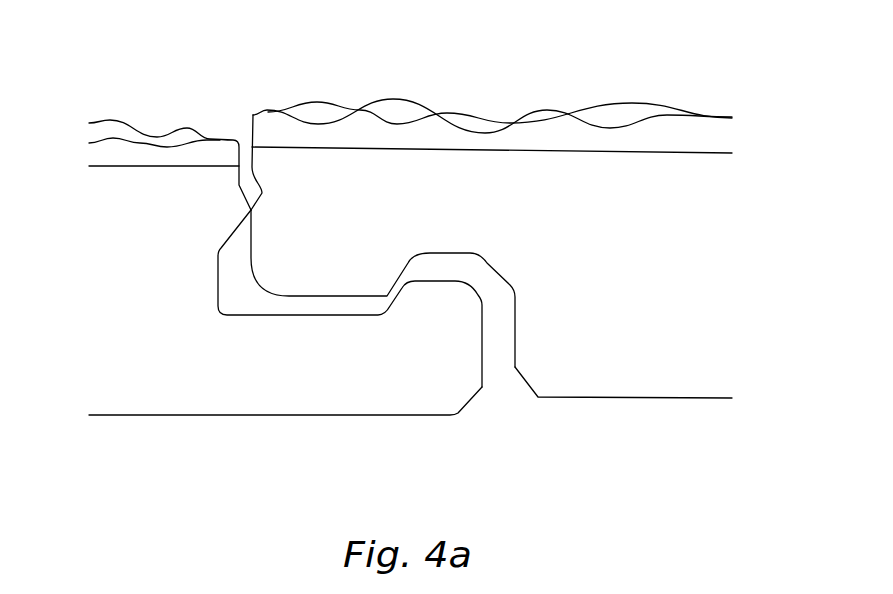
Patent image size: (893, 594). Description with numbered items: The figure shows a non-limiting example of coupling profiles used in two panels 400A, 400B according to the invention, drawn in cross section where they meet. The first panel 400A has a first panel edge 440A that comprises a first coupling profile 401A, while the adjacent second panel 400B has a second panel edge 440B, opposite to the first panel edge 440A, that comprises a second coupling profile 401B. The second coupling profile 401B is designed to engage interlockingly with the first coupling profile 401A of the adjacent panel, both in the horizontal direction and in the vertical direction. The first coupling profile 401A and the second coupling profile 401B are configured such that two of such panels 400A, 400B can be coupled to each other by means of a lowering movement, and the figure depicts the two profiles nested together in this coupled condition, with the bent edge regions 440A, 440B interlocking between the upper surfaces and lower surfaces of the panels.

The panel 400A is at (111, 98).
The panel 400B is at (648, 78).
The first coupling profile 401A is at (192, 430).
The second coupling profile 401B is at (654, 417).
The first panel edge 440A is at (427, 365).
The second panel edge 440B is at (670, 278).